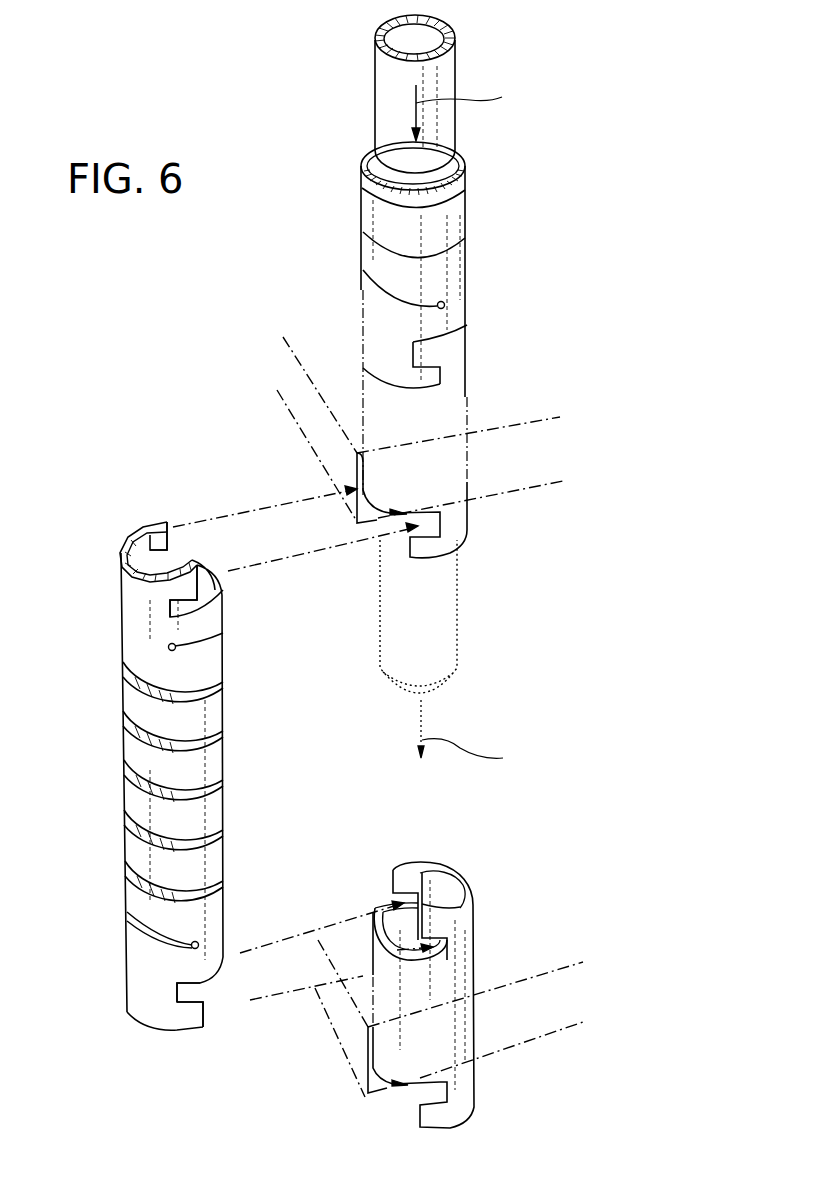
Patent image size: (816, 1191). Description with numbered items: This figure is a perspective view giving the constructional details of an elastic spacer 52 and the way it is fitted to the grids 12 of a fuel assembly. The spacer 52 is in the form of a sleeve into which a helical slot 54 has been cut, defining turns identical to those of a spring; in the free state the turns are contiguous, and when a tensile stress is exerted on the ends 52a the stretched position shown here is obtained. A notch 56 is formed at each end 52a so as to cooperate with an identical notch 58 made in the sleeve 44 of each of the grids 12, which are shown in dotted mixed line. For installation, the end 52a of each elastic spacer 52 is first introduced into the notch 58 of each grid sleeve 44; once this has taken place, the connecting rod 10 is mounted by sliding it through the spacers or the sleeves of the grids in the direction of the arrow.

The connecting rod 10 is at (392, 72).
The grid 12 is at (533, 493).
The sleeve 44 is at (437, 407).
The elastic spacer 52 is at (464, 253).
The end 52a is at (118, 1055).
The helical slot 54 is at (446, 305).
The notch 56 is at (183, 605).
The notch 58 is at (433, 537).